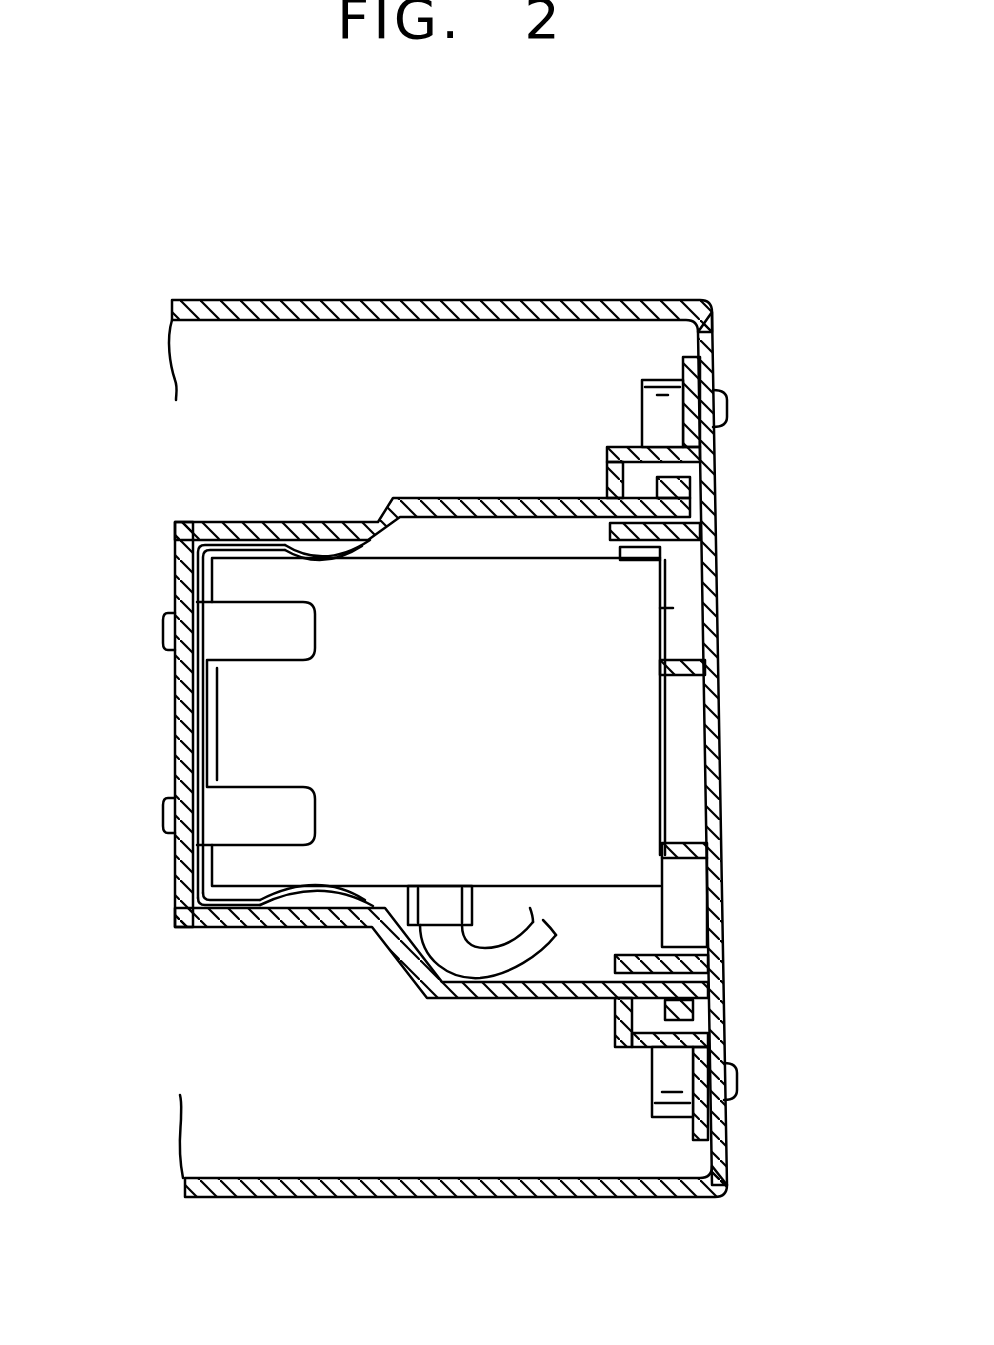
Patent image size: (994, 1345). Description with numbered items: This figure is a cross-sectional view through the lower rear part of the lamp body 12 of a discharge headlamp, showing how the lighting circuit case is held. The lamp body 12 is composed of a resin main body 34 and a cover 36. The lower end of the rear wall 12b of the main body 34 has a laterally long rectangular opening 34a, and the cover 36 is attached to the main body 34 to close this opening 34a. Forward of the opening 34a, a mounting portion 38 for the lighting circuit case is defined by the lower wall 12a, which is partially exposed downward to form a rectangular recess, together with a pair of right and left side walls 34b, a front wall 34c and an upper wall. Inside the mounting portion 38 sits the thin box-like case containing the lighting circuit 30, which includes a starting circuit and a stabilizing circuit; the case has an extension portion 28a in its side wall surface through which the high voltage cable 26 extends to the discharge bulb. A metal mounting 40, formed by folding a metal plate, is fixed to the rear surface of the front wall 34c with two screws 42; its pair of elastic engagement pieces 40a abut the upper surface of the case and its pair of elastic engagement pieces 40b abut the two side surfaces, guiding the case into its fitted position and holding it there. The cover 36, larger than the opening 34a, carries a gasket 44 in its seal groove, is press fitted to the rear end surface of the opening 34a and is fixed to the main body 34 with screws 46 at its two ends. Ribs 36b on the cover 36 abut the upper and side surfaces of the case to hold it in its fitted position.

The lamp body 12 is at (527, 776).
The lower wall 12a is at (503, 1148).
The rear wall 12b is at (732, 1150).
The high voltage cable 26 is at (507, 945).
The extension portion 28a is at (440, 886).
The lighting circuit 30 is at (494, 546).
The main body 34 is at (460, 723).
The opening 34a is at (642, 970).
The side walls 34b is at (343, 522).
The front wall 34c is at (180, 713).
The cover 36 is at (668, 738).
The ribs 36b is at (660, 667).
The mounting portion for the lighting circuit case 38 is at (642, 1211).
The metal mounting 40 is at (233, 724).
The elastic engagement pieces 40a is at (270, 800).
The elastic engagement pieces 40b is at (320, 528).
The screws 42 is at (168, 625).
The gasket 44 is at (697, 1010).
The screws 46 is at (726, 410).